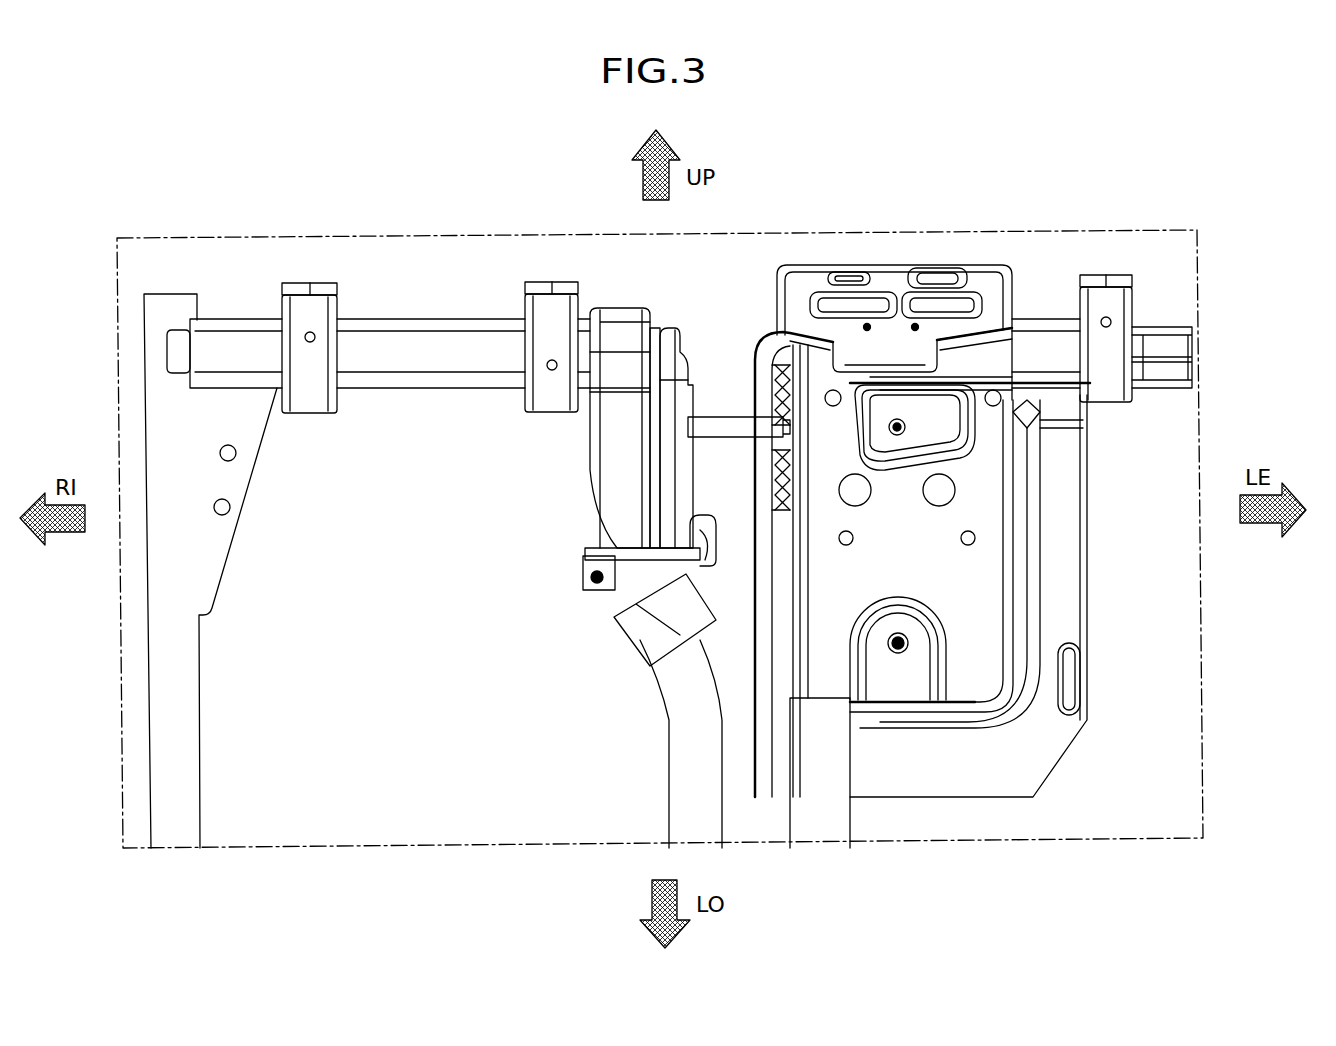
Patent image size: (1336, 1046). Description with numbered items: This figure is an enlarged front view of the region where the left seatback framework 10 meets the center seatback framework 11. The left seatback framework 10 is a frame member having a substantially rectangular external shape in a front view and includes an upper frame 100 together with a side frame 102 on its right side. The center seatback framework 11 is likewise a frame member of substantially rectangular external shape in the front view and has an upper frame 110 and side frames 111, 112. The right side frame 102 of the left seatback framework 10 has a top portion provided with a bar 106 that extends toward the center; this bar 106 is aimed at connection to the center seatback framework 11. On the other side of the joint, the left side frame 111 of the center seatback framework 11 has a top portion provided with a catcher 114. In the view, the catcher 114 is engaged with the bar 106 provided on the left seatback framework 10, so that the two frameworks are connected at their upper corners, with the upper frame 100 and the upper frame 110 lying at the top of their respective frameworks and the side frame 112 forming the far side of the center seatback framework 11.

The left seatback framework 10 is at (1158, 318).
The center seatback framework 11 is at (372, 312).
The upper frame 100 is at (1178, 320).
The side frame 102 is at (854, 822).
The bar 106 is at (718, 412).
The upper frame 110 is at (447, 312).
The side frame 111 is at (667, 722).
The side frame 112 is at (207, 740).
The catcher 114 is at (615, 308).